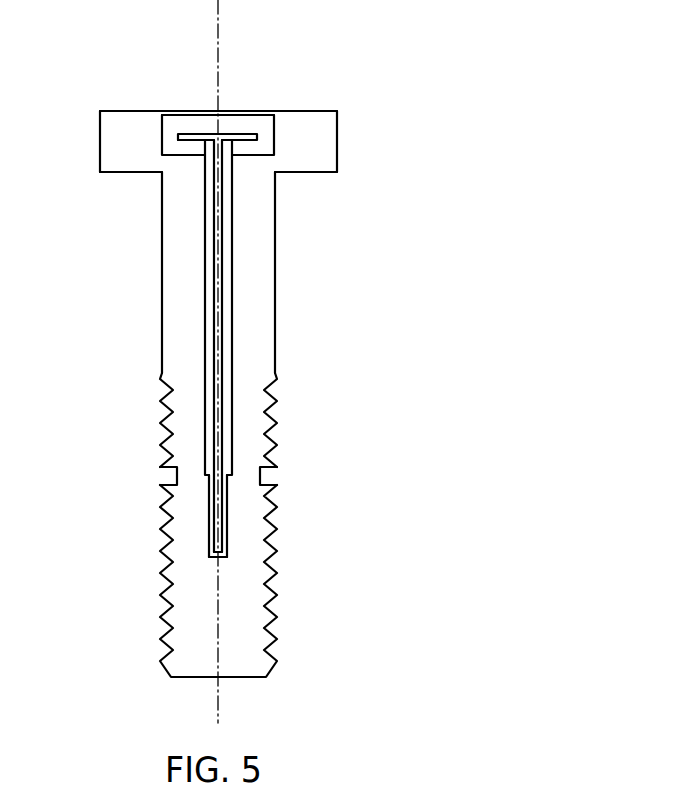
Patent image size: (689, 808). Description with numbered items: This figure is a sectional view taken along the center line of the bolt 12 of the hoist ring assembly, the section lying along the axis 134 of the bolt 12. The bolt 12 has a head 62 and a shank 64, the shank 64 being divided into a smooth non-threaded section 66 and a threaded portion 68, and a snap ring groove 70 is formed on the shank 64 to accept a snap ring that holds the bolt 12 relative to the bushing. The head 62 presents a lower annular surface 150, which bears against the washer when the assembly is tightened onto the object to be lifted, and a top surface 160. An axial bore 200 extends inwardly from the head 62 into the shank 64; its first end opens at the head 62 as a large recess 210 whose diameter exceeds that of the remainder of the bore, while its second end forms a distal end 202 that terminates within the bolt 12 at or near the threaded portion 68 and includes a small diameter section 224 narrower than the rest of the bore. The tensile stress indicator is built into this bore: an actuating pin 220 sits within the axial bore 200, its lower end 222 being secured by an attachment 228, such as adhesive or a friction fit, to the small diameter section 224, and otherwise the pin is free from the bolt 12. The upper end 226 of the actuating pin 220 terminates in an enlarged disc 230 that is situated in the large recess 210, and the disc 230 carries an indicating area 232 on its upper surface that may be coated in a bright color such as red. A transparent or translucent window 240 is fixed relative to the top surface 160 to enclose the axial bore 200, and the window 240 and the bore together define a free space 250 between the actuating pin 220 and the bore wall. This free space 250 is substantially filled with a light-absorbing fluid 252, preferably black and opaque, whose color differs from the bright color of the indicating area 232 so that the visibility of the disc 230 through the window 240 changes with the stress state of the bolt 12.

The bolt 12 is at (362, 104).
The head 62 is at (129, 123).
The shank 64 is at (250, 375).
The non-threaded section 66 is at (258, 322).
The threaded portion 68 is at (192, 618).
The snap ring groove 70 is at (157, 471).
The axis of the bolt 134 is at (216, 697).
The lower annular surface 150 is at (104, 181).
The top surface 160 is at (318, 103).
The axial bore 200 is at (232, 266).
The distal end 202 is at (237, 551).
The large recess 210 is at (152, 143).
The actuating pin 220 is at (223, 242).
The lower end 222 is at (210, 505).
The small diameter section 224 is at (227, 522).
The upper end 226 is at (205, 146).
The attachment 228 is at (198, 544).
The disc 230 is at (195, 110).
The indicating area 232 is at (246, 126).
The window 240 is at (180, 110).
The free space 250 is at (270, 126).
The light-absorbing fluid 252 is at (268, 148).